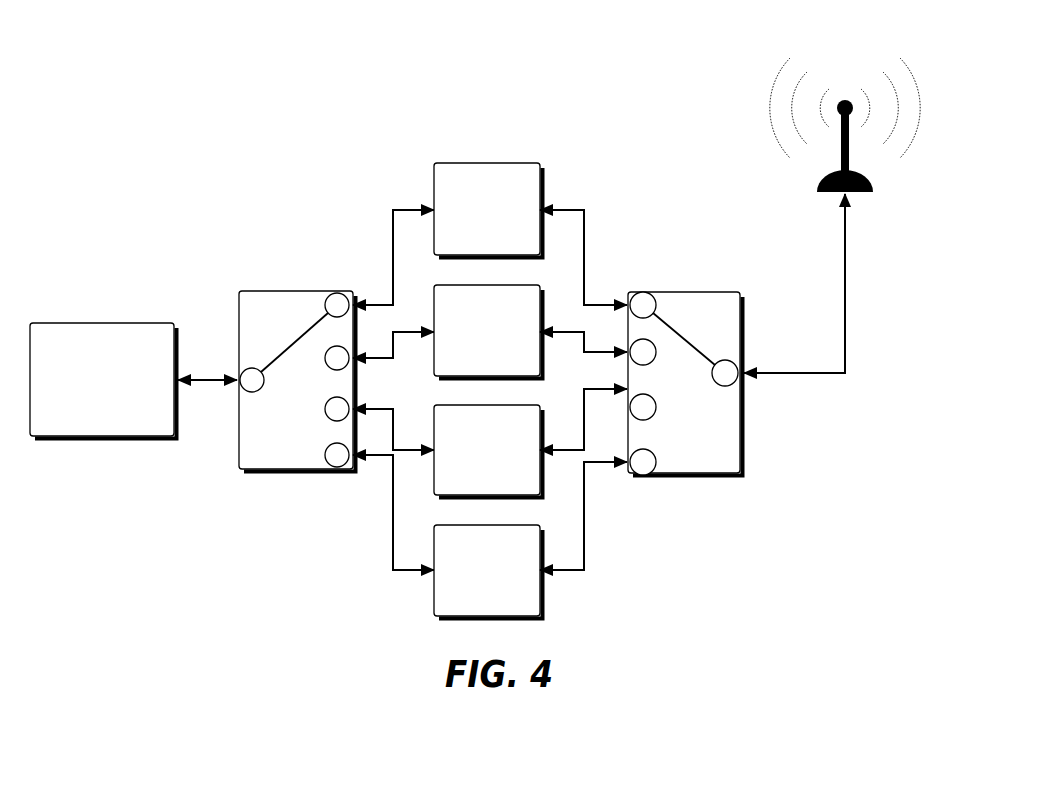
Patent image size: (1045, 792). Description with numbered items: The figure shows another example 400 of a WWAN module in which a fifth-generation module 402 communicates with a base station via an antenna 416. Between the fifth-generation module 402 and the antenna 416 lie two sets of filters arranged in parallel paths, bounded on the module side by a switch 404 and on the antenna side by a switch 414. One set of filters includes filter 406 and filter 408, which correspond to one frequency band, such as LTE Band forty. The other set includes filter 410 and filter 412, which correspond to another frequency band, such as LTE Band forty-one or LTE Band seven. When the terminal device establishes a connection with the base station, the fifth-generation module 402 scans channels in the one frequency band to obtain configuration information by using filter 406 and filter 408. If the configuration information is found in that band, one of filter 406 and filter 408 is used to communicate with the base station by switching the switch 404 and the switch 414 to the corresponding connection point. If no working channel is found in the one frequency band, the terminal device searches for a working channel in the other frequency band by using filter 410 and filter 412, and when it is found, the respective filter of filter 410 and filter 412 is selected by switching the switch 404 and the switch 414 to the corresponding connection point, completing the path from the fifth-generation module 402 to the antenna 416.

The WWAN module example 400 is at (236, 58).
The 5G module 402 is at (105, 323).
The switch 404 is at (292, 291).
The filter 406 is at (507, 163).
The filter 408 is at (507, 285).
The filter 410 is at (507, 405).
The filter 412 is at (507, 525).
The switch 414 is at (690, 292).
The antenna 416 is at (870, 55).